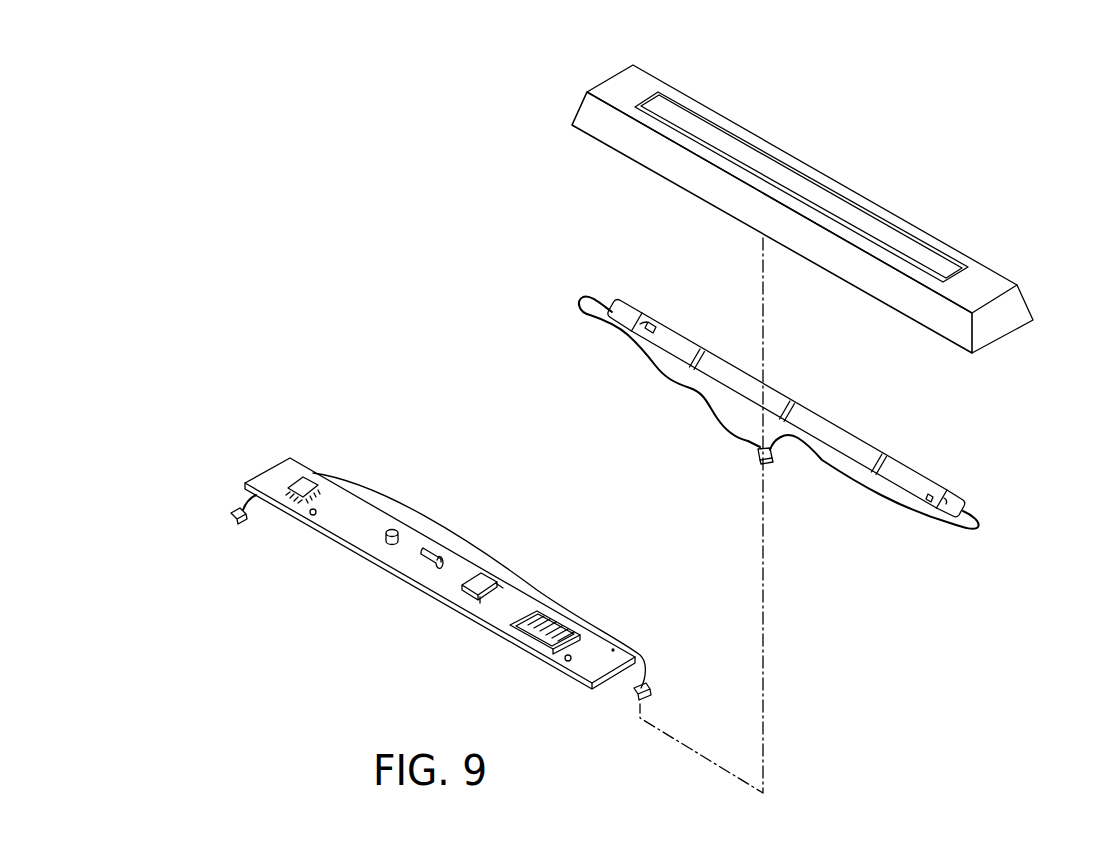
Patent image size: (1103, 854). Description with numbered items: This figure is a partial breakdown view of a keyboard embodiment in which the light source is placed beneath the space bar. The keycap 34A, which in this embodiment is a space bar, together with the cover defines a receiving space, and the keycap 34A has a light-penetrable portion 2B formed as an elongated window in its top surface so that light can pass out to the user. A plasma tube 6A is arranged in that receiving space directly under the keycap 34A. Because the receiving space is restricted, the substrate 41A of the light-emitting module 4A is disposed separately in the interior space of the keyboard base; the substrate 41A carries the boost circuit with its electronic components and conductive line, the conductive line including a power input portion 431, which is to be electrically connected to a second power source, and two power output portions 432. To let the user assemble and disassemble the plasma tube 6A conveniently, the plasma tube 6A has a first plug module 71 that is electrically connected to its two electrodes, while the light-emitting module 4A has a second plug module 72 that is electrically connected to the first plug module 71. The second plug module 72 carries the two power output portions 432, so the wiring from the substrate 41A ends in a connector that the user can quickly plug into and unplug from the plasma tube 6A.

The light-penetrable portion 2B is at (837, 195).
The keycap 34A is at (975, 282).
The light-emitting module 4A is at (388, 499).
The substrate 41A is at (413, 583).
The power input portion 431 is at (232, 516).
The power output portions 432 is at (543, 580).
The plasma tube 6A is at (825, 430).
The first plug module 71 is at (770, 459).
The second plug module 72 is at (637, 697).